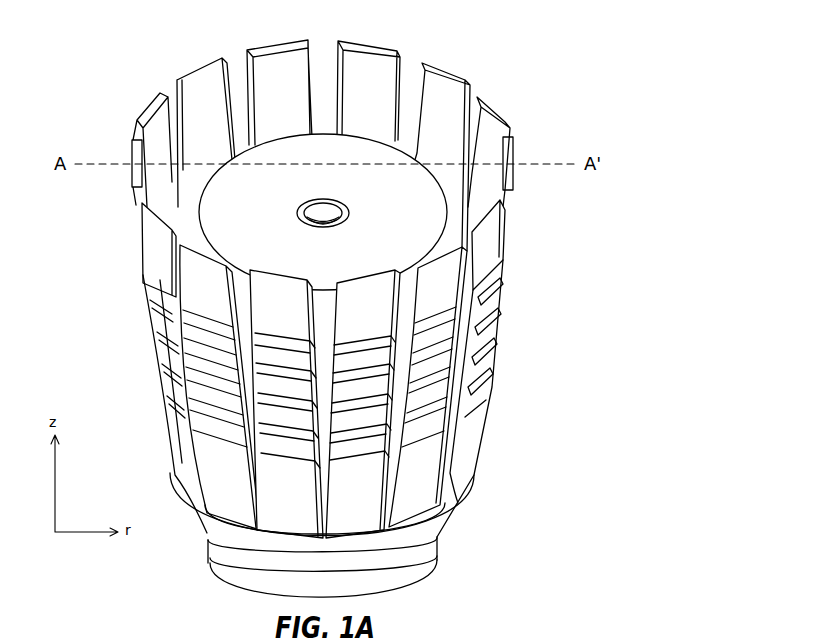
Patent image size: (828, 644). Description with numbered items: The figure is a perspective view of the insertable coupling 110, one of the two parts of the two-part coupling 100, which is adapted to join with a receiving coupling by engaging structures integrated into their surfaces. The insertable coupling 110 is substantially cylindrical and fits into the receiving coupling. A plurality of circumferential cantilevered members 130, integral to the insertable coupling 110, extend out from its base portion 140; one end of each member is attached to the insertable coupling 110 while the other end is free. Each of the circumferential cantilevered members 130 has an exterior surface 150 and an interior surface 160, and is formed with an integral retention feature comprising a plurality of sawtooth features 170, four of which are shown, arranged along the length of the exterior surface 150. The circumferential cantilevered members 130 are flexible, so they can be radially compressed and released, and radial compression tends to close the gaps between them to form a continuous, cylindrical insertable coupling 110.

The two-part coupling 100 is at (404, 308).
The insertable coupling 110 is at (379, 276).
The circumferential cantilevered members 130 is at (277, 47).
The base portion 140 is at (214, 590).
The exterior surface 150 is at (490, 235).
The interior surface 160 is at (443, 100).
The sawtooth features 170 is at (477, 397).